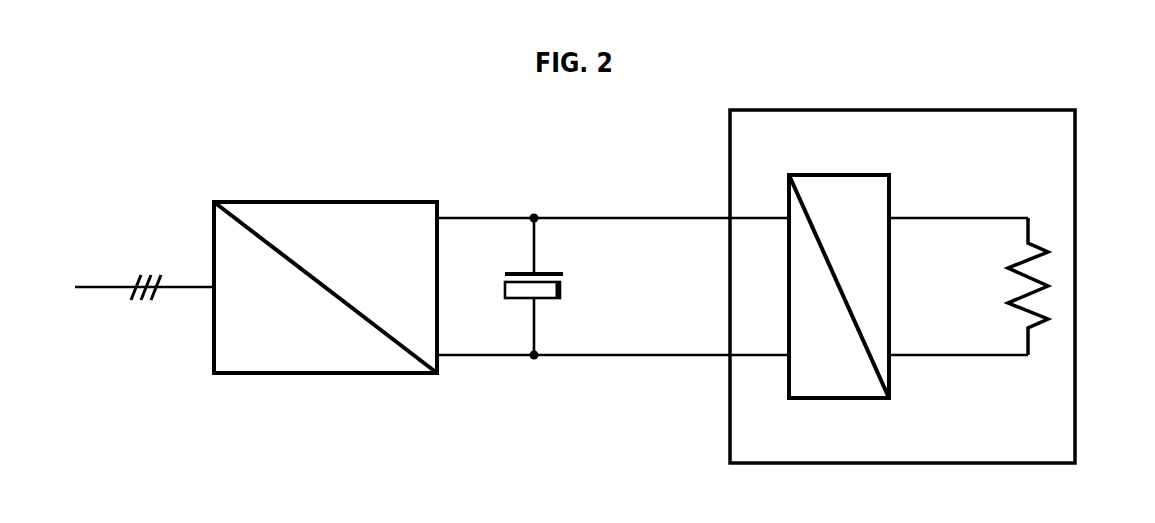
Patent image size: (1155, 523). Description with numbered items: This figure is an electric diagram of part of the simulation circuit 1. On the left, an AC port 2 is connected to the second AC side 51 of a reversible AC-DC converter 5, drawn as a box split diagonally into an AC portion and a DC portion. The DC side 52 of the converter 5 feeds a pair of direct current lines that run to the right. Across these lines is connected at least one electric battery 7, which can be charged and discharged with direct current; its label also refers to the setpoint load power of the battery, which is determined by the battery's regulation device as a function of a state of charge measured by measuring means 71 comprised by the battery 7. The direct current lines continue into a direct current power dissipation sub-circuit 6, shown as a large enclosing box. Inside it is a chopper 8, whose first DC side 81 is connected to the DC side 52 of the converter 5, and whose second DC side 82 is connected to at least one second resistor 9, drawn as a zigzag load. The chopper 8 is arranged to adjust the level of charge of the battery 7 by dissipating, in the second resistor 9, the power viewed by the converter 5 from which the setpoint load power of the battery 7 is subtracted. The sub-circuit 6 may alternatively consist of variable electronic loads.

The simulation circuit 1 is at (1066, 44).
The AC port 2 is at (104, 283).
The reversible AC-DC converter 5 is at (327, 203).
The second AC side 51 is at (226, 341).
The DC side 52 is at (437, 258).
The electric battery 7 is at (562, 289).
The measuring means 71 is at (532, 290).
The direct current power dissipation sub-circuit 6 is at (1078, 287).
The chopper 8 is at (839, 173).
The first DC side of chopper 81 is at (799, 379).
The second DC side of chopper 82 is at (877, 193).
The second resistor 9 is at (1020, 264).